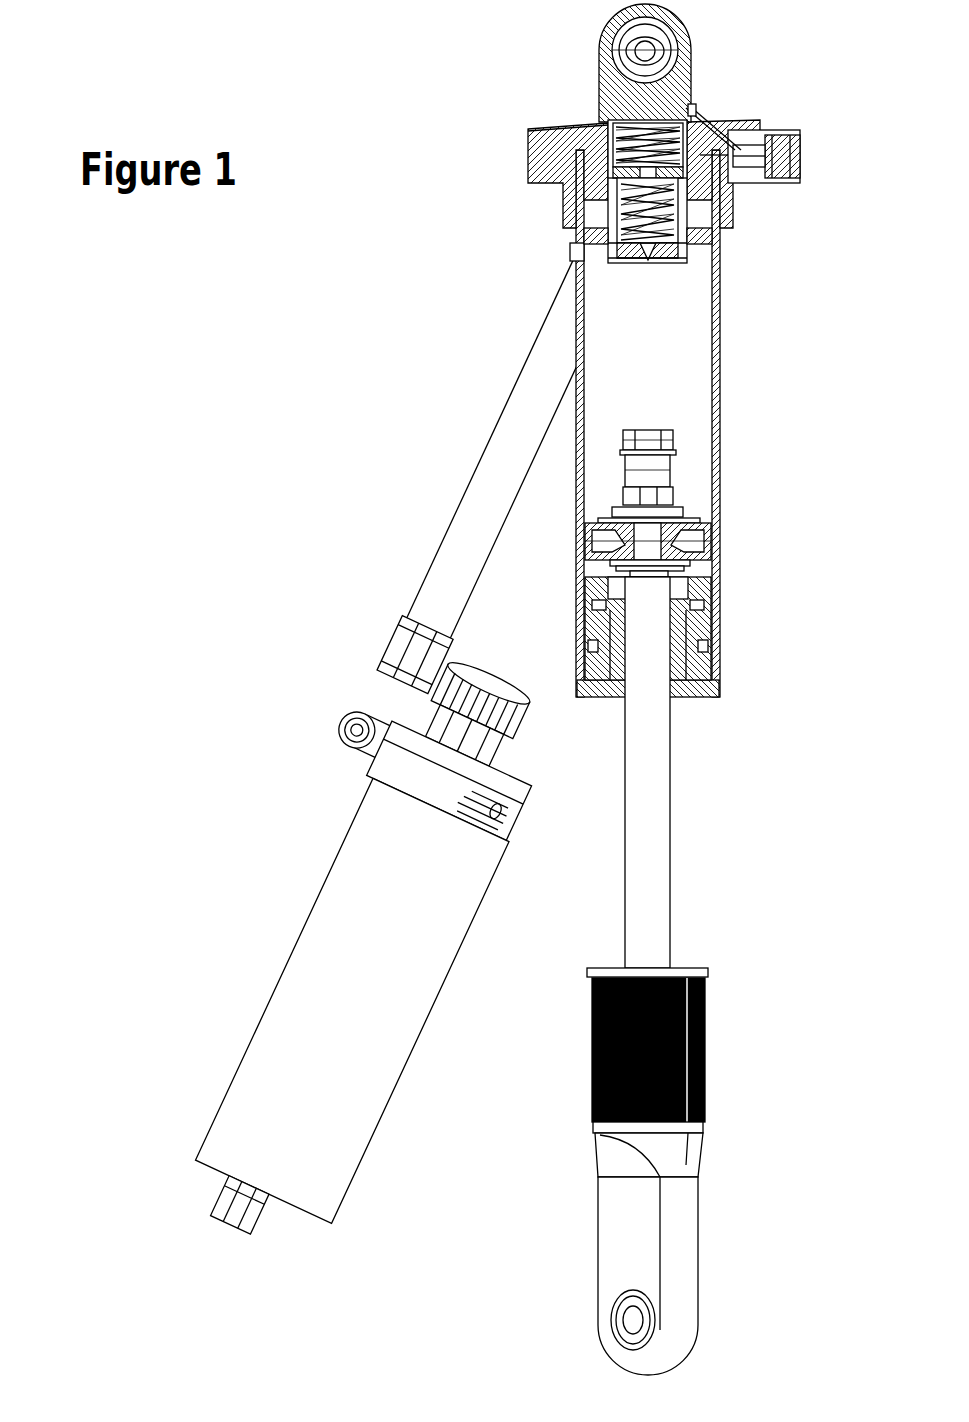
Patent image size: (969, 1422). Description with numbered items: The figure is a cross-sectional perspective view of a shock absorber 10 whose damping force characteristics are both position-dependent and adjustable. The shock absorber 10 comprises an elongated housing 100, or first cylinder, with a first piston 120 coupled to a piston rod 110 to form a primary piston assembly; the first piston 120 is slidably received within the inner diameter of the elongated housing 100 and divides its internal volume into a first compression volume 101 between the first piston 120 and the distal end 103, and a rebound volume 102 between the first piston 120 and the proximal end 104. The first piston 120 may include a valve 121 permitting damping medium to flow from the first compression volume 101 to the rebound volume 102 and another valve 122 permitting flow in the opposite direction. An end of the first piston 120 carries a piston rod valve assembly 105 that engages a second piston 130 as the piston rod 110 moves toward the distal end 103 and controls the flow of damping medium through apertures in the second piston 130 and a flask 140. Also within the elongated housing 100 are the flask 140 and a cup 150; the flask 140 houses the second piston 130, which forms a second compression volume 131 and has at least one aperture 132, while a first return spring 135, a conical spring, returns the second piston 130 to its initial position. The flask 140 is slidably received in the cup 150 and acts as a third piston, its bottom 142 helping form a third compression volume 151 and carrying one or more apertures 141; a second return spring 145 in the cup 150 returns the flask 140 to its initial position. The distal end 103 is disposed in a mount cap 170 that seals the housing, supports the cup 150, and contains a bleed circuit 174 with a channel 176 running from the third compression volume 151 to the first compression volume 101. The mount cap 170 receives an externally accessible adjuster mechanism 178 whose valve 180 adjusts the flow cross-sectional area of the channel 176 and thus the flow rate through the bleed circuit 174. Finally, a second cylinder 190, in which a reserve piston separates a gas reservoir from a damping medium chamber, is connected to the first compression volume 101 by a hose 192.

The shock absorber 10 is at (88, 396).
The elongated housing 100 is at (713, 373).
The first compression volume 101 is at (689, 318).
The rebound volume 102 is at (704, 557).
The distal end 103 is at (525, 195).
The proximal end 104 is at (757, 667).
The piston rod valve assembly 105 is at (652, 410).
The piston rod 110 is at (656, 745).
The first piston 120 is at (700, 508).
The valve 121 is at (694, 515).
The valve 122 is at (592, 518).
The second piston 130 is at (657, 274).
The second compression volume 131 is at (597, 258).
The aperture 132 is at (646, 272).
The first return spring 135 is at (572, 262).
The flask 140 is at (686, 256).
The apertures 141 is at (690, 262).
The bottom 142 is at (604, 234).
The second return spring 145 is at (611, 147).
The cup 150 is at (650, 173).
The third compression volume 151 is at (563, 141).
The mount cap 170 is at (524, 160).
The bleed circuit 174 is at (691, 107).
The channel 176 is at (740, 130).
The adjuster mechanism 178 is at (788, 186).
The valve 180 is at (740, 170).
The second cylinder 190 is at (325, 858).
The hose 192 is at (513, 447).